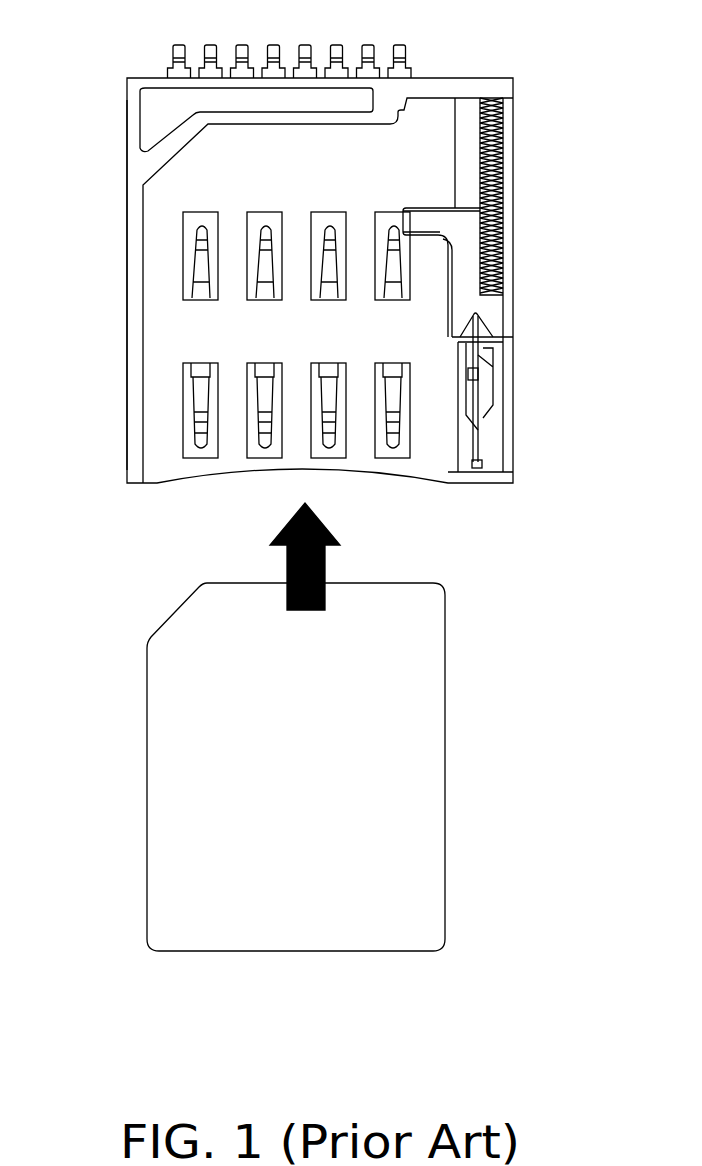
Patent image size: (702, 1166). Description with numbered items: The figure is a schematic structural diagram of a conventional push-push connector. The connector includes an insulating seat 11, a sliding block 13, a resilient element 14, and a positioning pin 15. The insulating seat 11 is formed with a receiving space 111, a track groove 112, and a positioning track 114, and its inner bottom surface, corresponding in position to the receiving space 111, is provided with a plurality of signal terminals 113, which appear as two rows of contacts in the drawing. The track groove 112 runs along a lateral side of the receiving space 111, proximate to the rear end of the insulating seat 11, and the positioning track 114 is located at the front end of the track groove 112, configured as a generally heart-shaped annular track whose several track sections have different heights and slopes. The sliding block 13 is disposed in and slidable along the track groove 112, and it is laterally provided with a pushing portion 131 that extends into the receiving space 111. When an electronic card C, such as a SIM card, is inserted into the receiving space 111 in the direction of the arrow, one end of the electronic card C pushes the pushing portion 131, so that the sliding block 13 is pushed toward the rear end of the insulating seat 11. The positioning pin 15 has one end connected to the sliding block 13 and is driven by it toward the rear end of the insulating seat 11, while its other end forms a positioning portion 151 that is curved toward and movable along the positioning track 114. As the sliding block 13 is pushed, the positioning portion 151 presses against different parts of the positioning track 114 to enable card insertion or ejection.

The insulating seat 11 is at (430, 90).
The receiving space 111 is at (166, 337).
The track groove 112 is at (463, 116).
The signal terminals 113 is at (200, 245).
The positioning track 114 is at (503, 400).
The sliding block 13 is at (463, 265).
The pushing portion 131 is at (413, 225).
The resilient element 14 is at (504, 133).
The positioning pin 15 is at (488, 352).
The positioning portion 151 is at (479, 463).
The electronic card C is at (420, 772).